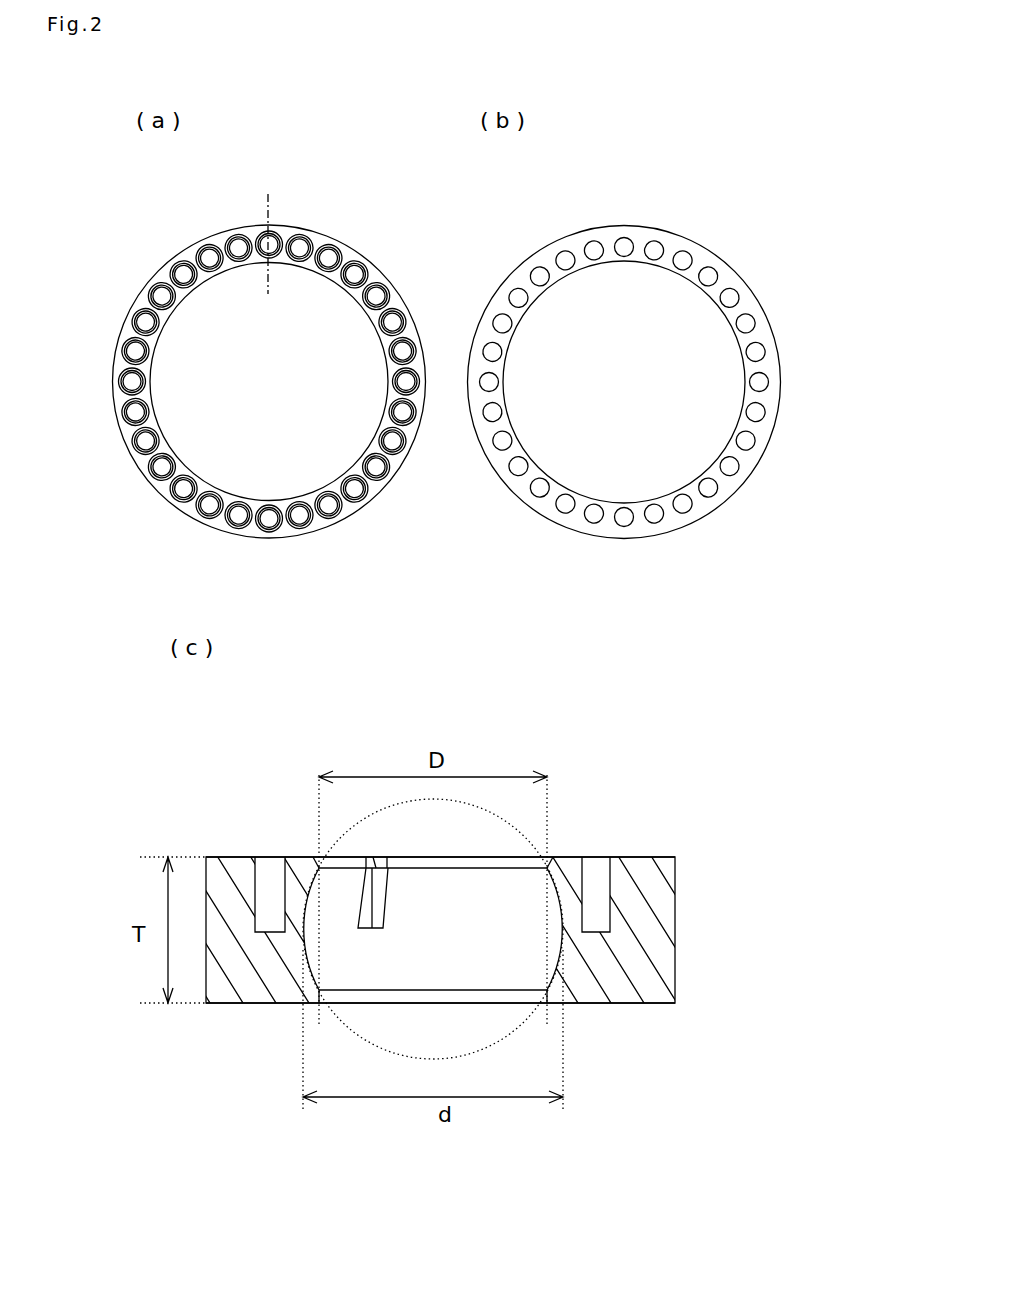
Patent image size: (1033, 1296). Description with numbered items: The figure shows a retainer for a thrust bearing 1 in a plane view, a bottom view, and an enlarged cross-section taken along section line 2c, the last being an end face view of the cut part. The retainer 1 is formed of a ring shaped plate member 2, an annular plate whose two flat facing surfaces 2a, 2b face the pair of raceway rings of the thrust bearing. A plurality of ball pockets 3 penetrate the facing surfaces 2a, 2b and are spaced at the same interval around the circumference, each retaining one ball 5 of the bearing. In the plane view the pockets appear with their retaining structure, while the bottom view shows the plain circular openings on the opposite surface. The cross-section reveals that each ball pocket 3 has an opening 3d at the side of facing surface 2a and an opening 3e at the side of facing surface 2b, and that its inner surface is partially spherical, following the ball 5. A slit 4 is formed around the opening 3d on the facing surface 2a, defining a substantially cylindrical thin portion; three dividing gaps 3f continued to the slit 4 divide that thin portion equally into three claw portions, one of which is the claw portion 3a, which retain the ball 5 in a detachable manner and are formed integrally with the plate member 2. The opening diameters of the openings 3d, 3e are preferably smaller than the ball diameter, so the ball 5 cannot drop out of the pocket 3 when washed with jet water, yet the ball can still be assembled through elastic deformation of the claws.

The retainer for a thrust bearing 1 is at (445, 629).
The ring shaped plate member 2 is at (372, 276).
The facing surface 2a is at (190, 260).
The facing surface 2b is at (603, 238).
The section line 2c is at (268, 194).
The ball pocket 3 is at (375, 674).
The claw portion 3a is at (302, 868).
The opening 3d is at (345, 857).
The opening 3e is at (513, 1005).
The dividing gap 3f is at (563, 870).
The slit 4 is at (270, 880).
The ball 5 is at (365, 1020).